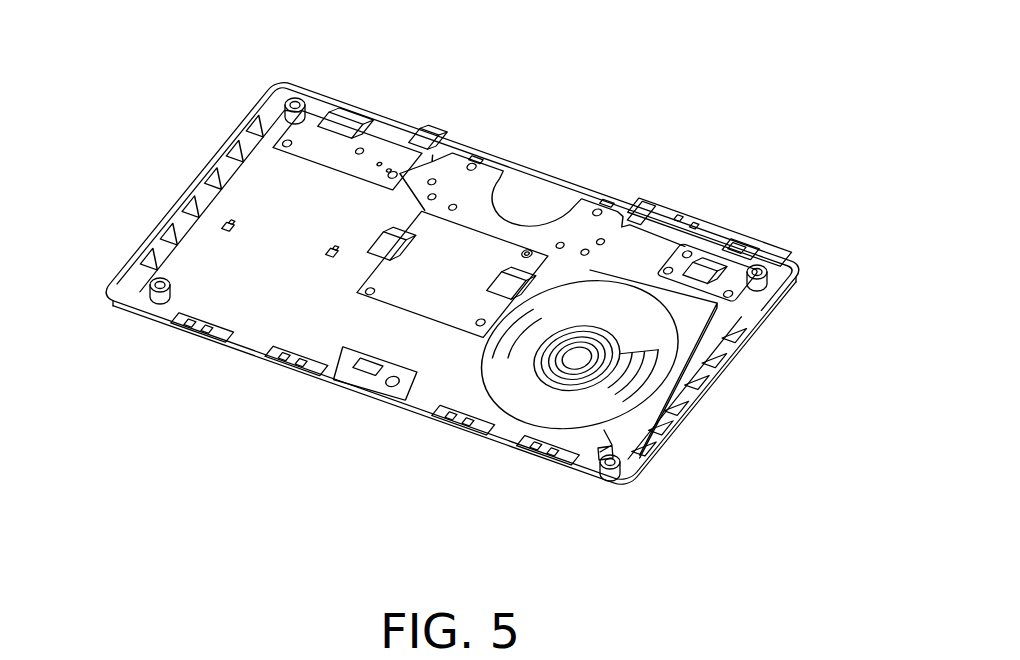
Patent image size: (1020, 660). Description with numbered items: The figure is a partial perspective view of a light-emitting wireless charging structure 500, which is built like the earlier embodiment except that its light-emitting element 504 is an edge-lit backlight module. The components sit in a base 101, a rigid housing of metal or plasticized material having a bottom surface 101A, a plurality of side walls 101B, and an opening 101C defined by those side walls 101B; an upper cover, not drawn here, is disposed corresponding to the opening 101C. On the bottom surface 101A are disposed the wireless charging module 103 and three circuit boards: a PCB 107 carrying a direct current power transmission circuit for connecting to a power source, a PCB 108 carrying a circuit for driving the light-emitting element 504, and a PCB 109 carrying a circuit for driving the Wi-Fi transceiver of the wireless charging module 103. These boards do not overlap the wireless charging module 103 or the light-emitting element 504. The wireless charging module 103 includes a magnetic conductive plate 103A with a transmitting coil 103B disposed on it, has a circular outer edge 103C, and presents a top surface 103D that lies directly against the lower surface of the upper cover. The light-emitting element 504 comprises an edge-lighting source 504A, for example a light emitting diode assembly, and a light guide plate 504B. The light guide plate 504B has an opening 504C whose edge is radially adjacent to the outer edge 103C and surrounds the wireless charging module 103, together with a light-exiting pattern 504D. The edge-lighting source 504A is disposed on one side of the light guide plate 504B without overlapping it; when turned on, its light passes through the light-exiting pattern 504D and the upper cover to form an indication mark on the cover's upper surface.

The light-emitting wireless charging structure 500 is at (68, 40).
The base 101 is at (248, 426).
The bottom surface 101A is at (262, 308).
The side walls 101B is at (147, 266).
The opening 101C is at (187, 337).
The PCB 107 is at (369, 157).
The PCB 108 is at (467, 247).
The PCB 109 is at (720, 277).
The wireless charging module 103 is at (846, 345).
The magnetic conductive plate 103A is at (658, 353).
The transmitting coil 103B is at (624, 401).
The circular edge 103C is at (605, 388).
The top surface 103D is at (610, 337).
The light-emitting element 504 is at (578, 545).
The edge-lighting source 504A is at (543, 368).
The light guide plate 504B is at (542, 398).
The opening 504C is at (574, 392).
The light-exiting pattern 504D is at (487, 358).